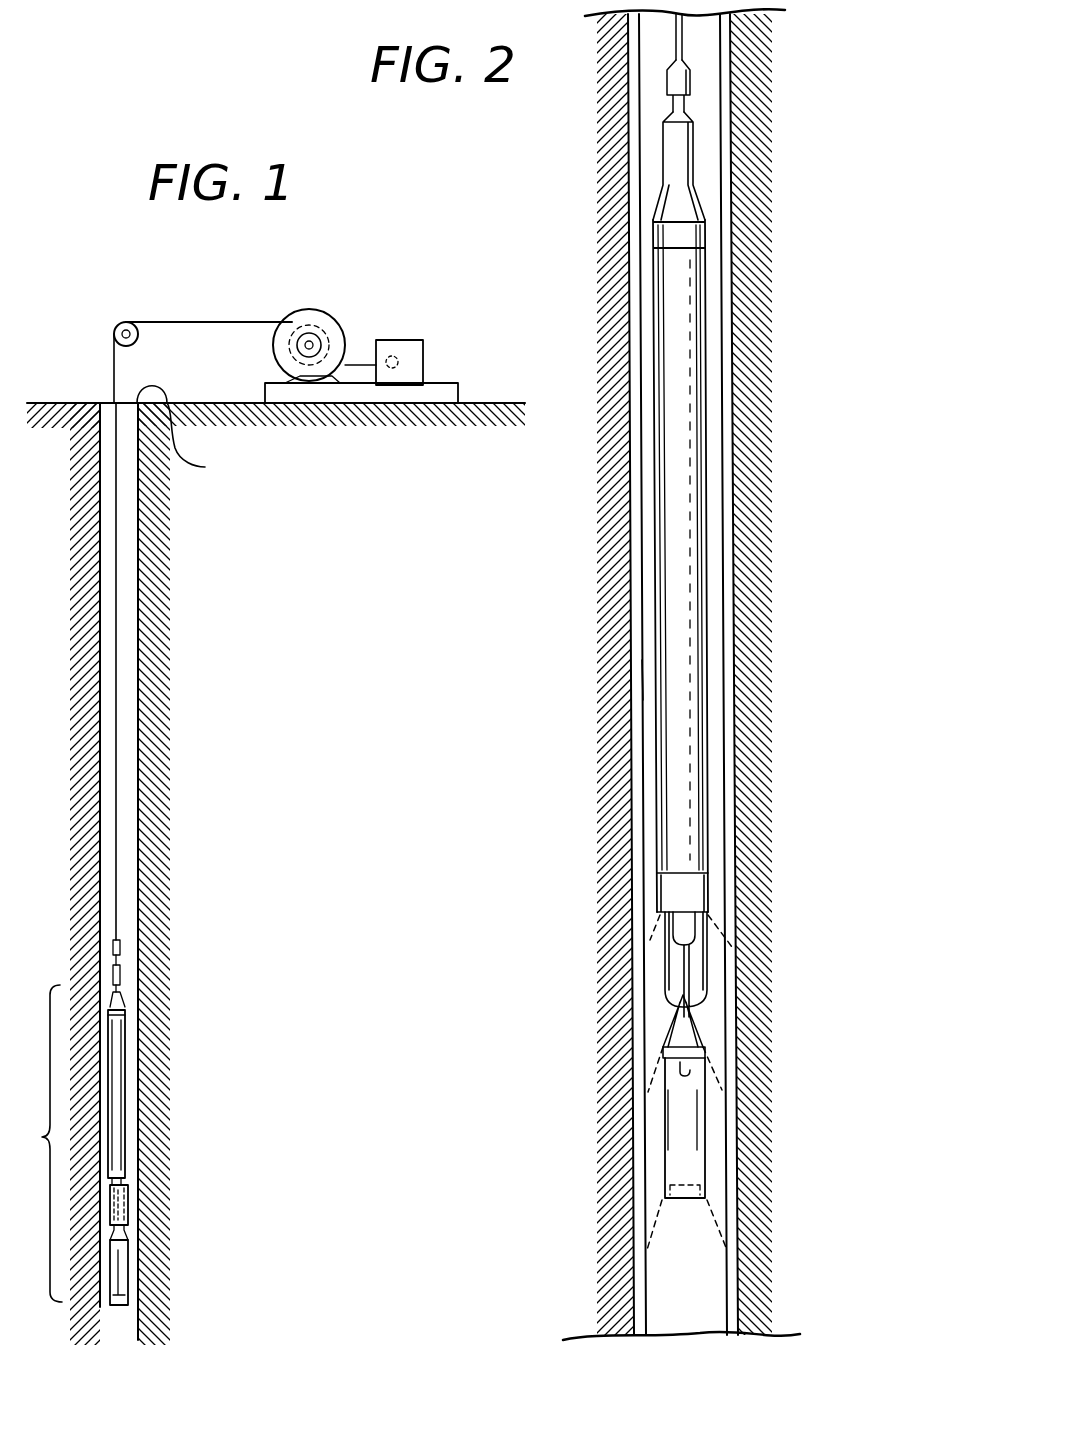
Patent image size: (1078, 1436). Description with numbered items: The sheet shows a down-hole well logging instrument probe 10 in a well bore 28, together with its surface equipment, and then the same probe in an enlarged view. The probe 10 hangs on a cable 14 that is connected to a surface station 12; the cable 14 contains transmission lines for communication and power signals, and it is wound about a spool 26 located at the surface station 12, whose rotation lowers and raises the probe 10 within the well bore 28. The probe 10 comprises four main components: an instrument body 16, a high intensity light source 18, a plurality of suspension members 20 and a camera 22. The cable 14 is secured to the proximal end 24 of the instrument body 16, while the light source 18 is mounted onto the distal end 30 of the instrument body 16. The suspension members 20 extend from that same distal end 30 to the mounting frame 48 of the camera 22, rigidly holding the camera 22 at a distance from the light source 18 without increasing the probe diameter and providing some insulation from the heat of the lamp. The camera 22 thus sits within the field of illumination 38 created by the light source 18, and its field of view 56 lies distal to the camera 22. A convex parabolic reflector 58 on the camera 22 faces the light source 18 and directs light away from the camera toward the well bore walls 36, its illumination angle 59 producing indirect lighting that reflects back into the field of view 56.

In FIG. 1, the well logging instrument probe 10 is at (136, 854).
In FIG. 2, the well logging instrument probe 10 is at (815, 478).
In FIG. 1, the surface station 12 is at (402, 340).
In FIG. 1, the cable 14 is at (116, 863).
In FIG. 2, the cable 14 is at (683, 50).
In FIG. 1, the instrument body 16 is at (125, 1070).
In FIG. 2, the instrument body 16 is at (708, 725).
In FIG. 2, the high intensity light source 18 is at (700, 933).
In FIG. 1, the suspension members 20 is at (128, 1205).
In FIG. 2, the suspension members 20 is at (772, 968).
In FIG. 1, the camera 22 is at (128, 1263).
In FIG. 2, the camera 22 is at (705, 1158).
In FIG. 2, the proximal end 24 is at (693, 143).
In FIG. 1, the spool 26 is at (317, 310).
In FIG. 1, the well bore 28 is at (191, 435).
In FIG. 2, the distal end 30 is at (712, 892).
In FIG. 2, the well bore walls 36 is at (644, 686).
In FIG. 2, the field of illumination 38 is at (648, 920).
In FIG. 2, the mounting frame 48 is at (705, 1056).
In FIG. 2, the field of view 56 is at (657, 1218).
In FIG. 2, the convex parabolic reflector 58 is at (677, 1032).
In FIG. 2, the illumination angle 59 is at (650, 1073).